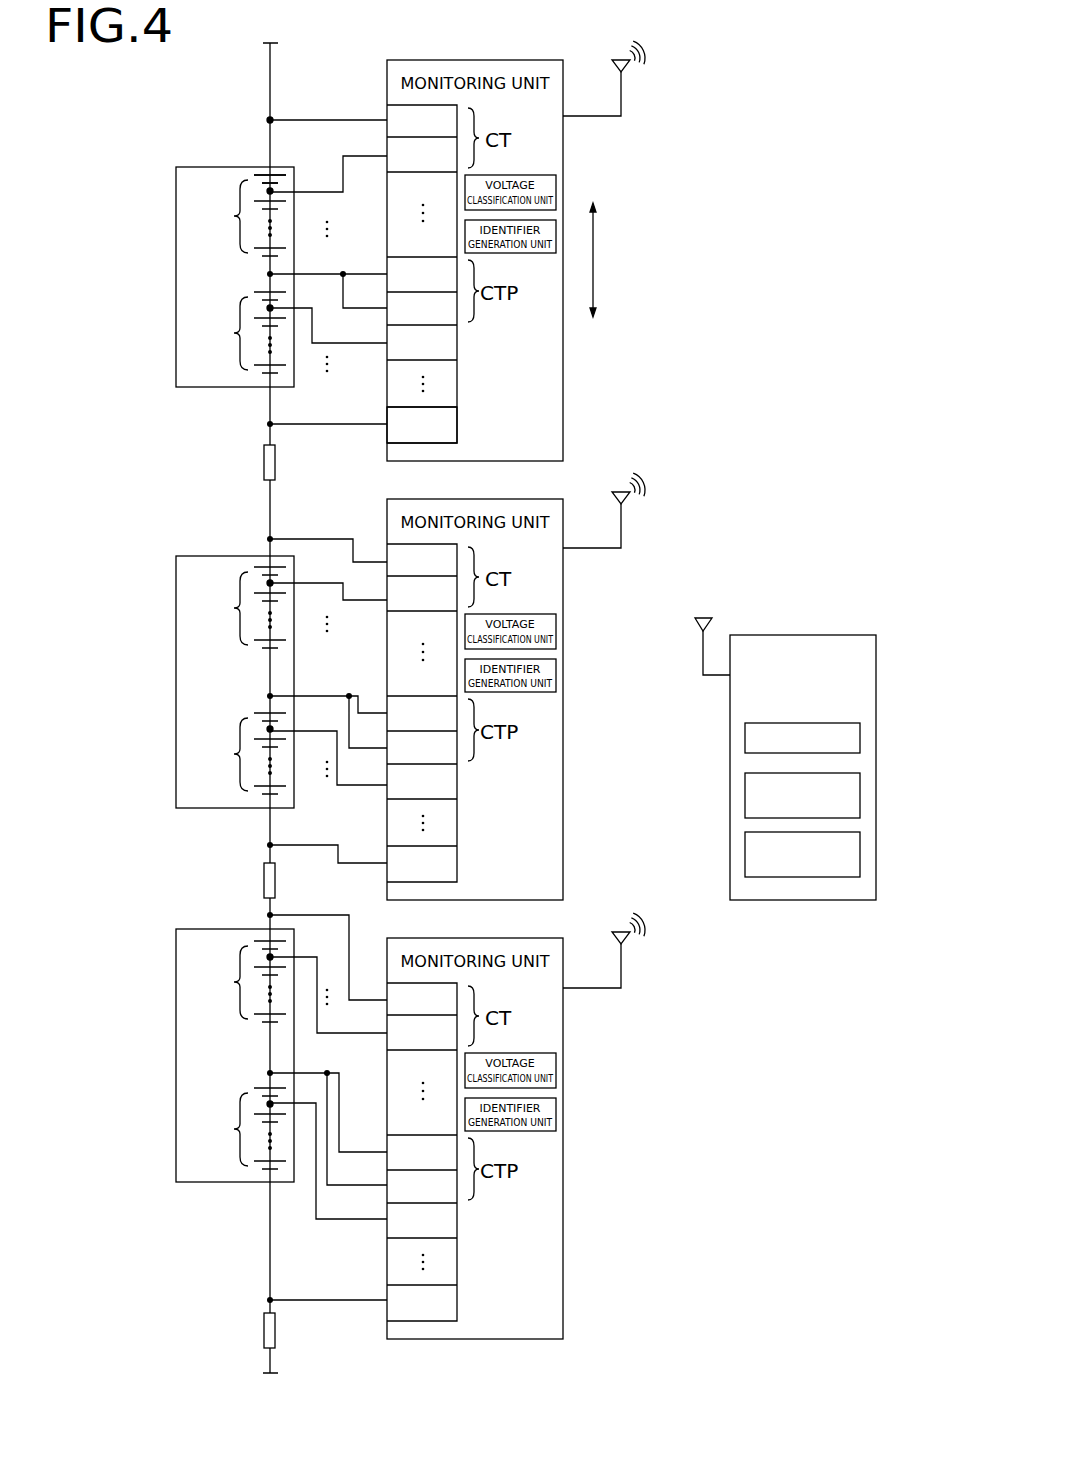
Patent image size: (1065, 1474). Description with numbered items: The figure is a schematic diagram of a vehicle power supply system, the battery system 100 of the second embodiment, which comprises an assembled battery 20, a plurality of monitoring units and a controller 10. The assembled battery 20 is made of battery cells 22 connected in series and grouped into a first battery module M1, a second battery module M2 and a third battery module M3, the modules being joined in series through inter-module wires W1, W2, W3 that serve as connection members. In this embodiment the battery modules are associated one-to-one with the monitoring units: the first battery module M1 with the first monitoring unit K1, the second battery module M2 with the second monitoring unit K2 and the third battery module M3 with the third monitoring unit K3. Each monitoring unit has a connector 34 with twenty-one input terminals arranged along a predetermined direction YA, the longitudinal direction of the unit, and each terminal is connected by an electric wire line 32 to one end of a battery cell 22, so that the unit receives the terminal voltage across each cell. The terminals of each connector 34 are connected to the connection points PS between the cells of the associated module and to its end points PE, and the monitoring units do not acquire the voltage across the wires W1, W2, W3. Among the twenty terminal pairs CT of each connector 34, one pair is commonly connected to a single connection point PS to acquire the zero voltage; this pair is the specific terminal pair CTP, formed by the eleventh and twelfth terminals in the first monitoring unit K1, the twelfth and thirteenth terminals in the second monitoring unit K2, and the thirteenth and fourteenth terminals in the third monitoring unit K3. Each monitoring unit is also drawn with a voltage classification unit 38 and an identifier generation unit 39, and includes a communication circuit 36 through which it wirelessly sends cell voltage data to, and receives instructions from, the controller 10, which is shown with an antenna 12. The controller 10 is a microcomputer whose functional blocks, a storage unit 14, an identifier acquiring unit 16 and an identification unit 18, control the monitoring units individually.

The battery system 100 is at (784, 94).
The controller 10 is at (857, 635).
The antenna of controller 12 is at (702, 659).
The storage unit 14 is at (833, 723).
The identifier acquiring unit 16 is at (860, 797).
The identification unit 18 is at (860, 863).
The assembled battery 20 is at (291, 73).
The battery cell 22 is at (264, 173).
The electric wire line 32 is at (333, 120).
The connector 34 is at (458, 430).
The communication circuit 36 is at (622, 95).
The voltage classification unit 38 is at (542, 175).
The identifier generation unit 39 is at (527, 253).
The first monitoring unit K1 is at (500, 61).
The second monitoring unit K2 is at (500, 500).
The third monitoring unit K3 is at (500, 939).
The first battery module M1 is at (176, 257).
The second battery module M2 is at (176, 652).
The third battery module M3 is at (176, 1025).
The inter-module wire W1 is at (264, 462).
The inter-module wire W2 is at (264, 880).
The inter-module wire W3 is at (264, 1330).
The end point PE is at (272, 119).
The connection point PS is at (272, 273).
The terminal pair CT is at (328, 594).
The specific terminal pair CTP is at (328, 763).
The predetermined direction YA is at (609, 260).